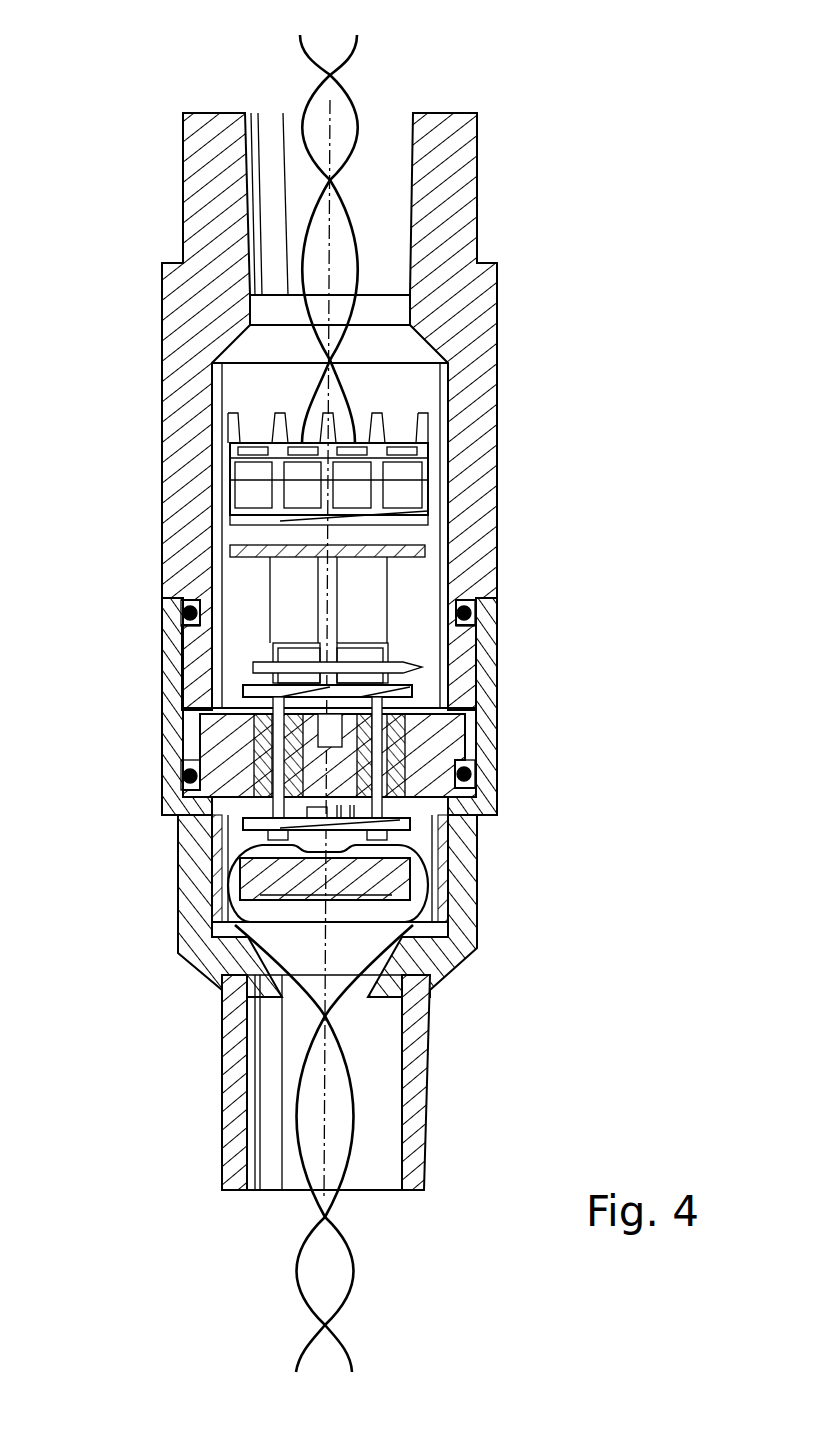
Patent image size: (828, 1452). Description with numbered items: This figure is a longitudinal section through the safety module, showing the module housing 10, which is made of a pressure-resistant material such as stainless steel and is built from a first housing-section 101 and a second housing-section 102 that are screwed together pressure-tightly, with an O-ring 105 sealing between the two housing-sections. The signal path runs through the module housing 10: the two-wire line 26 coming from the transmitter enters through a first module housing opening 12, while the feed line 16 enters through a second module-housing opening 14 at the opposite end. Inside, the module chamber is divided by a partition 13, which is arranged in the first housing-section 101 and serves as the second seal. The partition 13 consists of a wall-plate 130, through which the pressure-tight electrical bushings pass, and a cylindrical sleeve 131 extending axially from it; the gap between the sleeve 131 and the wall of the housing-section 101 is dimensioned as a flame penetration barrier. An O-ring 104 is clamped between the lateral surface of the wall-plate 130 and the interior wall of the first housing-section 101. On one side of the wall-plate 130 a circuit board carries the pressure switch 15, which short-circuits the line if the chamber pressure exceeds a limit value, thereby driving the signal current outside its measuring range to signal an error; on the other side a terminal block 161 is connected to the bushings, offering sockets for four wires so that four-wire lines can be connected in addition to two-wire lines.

The module housing 10 is at (490, 685).
The first module housing opening 12 is at (265, 1168).
The partition 13 is at (428, 742).
The second module-housing opening 14 is at (397, 145).
The pressure switch 15 is at (262, 870).
The feed line 16 is at (304, 53).
The two-wire line 26 is at (355, 1285).
The first housing-section 101 is at (460, 918).
The second housing-section 102 is at (498, 353).
The O-ring 104 is at (478, 772).
The O-ring 105 is at (480, 613).
The wall-plate 130 is at (198, 748).
The cylindrical sleeve 131 is at (458, 888).
The terminal block 161 is at (230, 473).